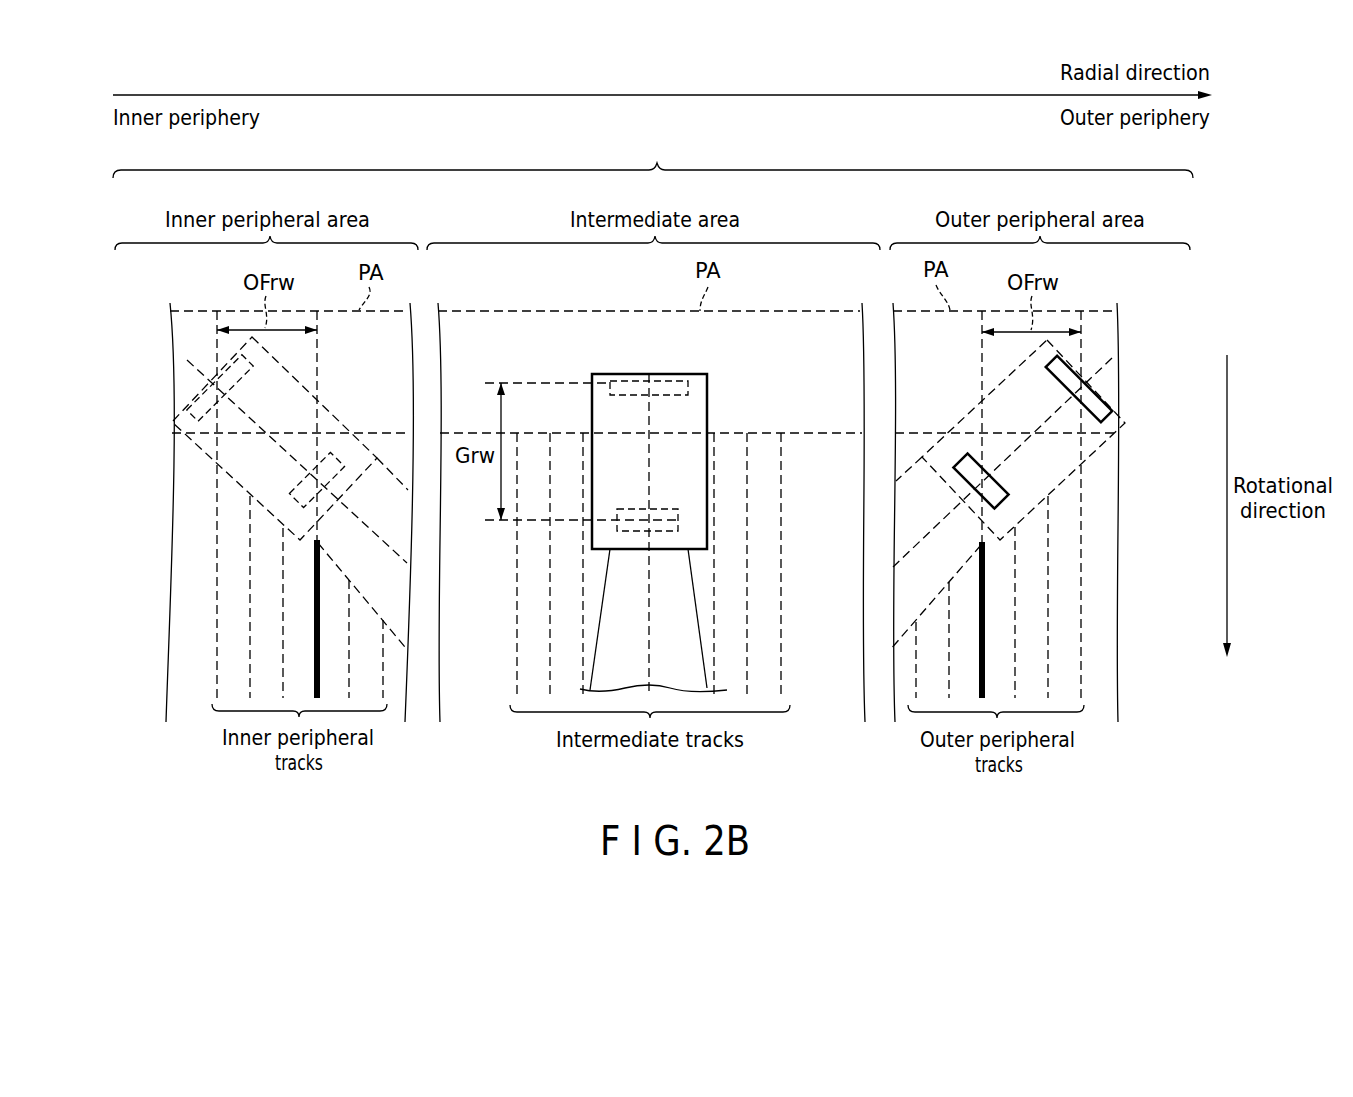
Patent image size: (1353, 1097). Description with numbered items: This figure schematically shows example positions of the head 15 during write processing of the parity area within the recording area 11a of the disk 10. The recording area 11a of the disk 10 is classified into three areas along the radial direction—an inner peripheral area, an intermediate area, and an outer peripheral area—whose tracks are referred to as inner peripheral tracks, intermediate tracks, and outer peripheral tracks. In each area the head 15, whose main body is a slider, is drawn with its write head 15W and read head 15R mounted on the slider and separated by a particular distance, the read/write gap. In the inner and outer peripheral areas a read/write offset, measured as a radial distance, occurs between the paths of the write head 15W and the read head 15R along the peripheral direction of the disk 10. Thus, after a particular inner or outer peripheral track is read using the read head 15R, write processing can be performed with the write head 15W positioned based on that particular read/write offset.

The magnetic disk 10 is at (653, 158).
The recording area 11a is at (205, 667).
The head 15 is at (197, 452).
The write head 15W is at (200, 393).
The read head 15R is at (300, 482).